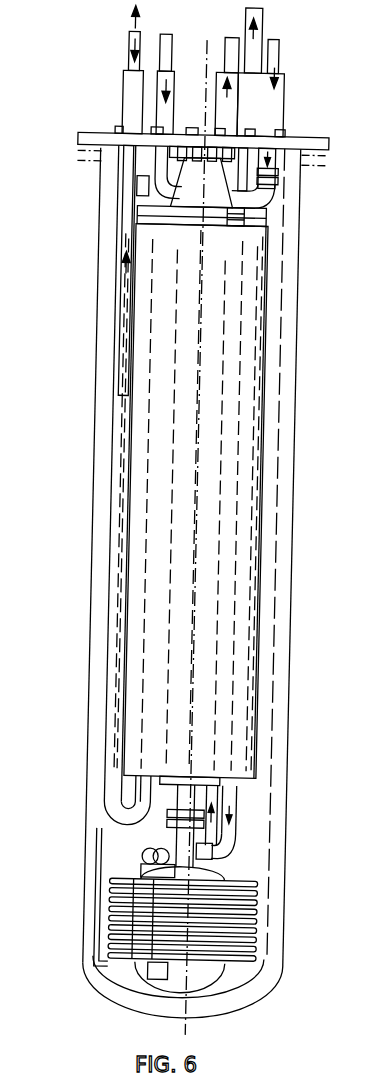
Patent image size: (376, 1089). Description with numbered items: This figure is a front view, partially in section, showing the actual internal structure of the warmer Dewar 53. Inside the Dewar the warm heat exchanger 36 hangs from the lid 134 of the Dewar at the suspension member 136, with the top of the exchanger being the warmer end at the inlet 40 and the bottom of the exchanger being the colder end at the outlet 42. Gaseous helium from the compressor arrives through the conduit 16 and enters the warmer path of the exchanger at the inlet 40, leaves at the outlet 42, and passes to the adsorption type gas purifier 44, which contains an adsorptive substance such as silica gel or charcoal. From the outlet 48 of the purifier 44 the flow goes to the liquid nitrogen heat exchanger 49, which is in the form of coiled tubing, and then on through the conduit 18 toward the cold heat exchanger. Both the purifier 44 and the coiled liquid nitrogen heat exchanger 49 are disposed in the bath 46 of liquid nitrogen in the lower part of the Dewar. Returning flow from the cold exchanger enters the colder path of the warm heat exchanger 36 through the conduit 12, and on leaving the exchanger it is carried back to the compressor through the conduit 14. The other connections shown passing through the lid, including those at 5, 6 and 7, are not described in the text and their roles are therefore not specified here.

The return pipe 5 is at (256, 823).
The inlet pipe 6 is at (118, 69).
The pipe 7 is at (109, 234).
The conduit 12 is at (117, 415).
The conduit 14 is at (266, 40).
The conduit 16 is at (276, 156).
The conduit 18 is at (262, 424).
The warm heat exchanger 36 is at (227, 501).
The inlet 40 is at (278, 188).
The outlet 42 is at (238, 811).
The adsorption type gas purifier 44 is at (190, 1002).
The bath of liquid nitrogen 46 is at (235, 865).
The outlet 48 is at (104, 860).
The liquid nitrogen heat exchanger 49 is at (210, 899).
The warmer Dewar 53 is at (98, 490).
The lid 134 is at (108, 137).
The suspension member 136 is at (153, 184).